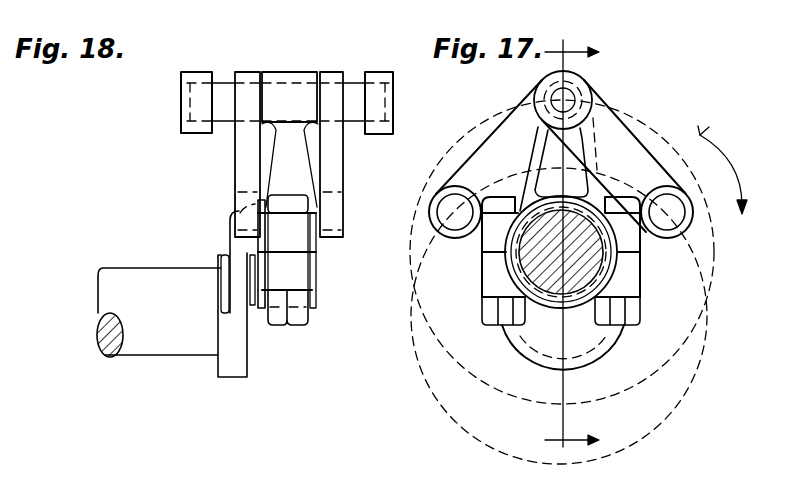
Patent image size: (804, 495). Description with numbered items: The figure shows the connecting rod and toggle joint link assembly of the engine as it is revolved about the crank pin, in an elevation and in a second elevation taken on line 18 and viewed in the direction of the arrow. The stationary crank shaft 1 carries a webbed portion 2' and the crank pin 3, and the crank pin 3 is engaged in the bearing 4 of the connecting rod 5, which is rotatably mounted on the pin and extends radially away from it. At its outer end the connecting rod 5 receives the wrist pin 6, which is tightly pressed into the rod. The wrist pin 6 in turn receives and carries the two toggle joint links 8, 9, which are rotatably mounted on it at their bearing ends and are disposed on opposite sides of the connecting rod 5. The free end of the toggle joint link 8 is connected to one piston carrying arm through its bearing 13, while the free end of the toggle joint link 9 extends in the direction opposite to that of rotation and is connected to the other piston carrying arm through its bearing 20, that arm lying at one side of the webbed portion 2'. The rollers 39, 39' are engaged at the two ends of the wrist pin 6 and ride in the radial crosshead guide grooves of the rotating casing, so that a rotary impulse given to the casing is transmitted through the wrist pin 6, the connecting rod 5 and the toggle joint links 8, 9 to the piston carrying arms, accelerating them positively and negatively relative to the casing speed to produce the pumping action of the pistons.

In FIG. 18, the stationary crank shaft 1 is at (163, 340).
In FIG. 17, the stationary crank shaft 1 is at (610, 357).
In FIG. 18, the webbed portion 2' is at (218, 294).
In FIG. 17, the crank pin 3 is at (577, 303).
In FIG. 17, the bearing 4 is at (546, 303).
In FIG. 18, the connecting rod 5 is at (297, 275).
In FIG. 17, the connecting rod 5 is at (538, 142).
In FIG. 18, the wrist pin 6 is at (353, 92).
In FIG. 17, the wrist pin 6 is at (576, 97).
In FIG. 18, the toggle joint link 8 is at (335, 170).
In FIG. 17, the toggle joint link 8 is at (632, 155).
In FIG. 18, the toggle joint link 9 is at (247, 175).
In FIG. 17, the toggle joint link 9 is at (520, 122).
In FIG. 17, the bearing 13 is at (648, 203).
In FIG. 17, the section line 18— 18 is at (571, 246).
In FIG. 17, the bearing 20 is at (473, 208).
In FIG. 18, the roller 39 is at (399, 103).
In FIG. 17, the roller 39 is at (585, 118).
In FIG. 18, the roller 39' is at (162, 102).